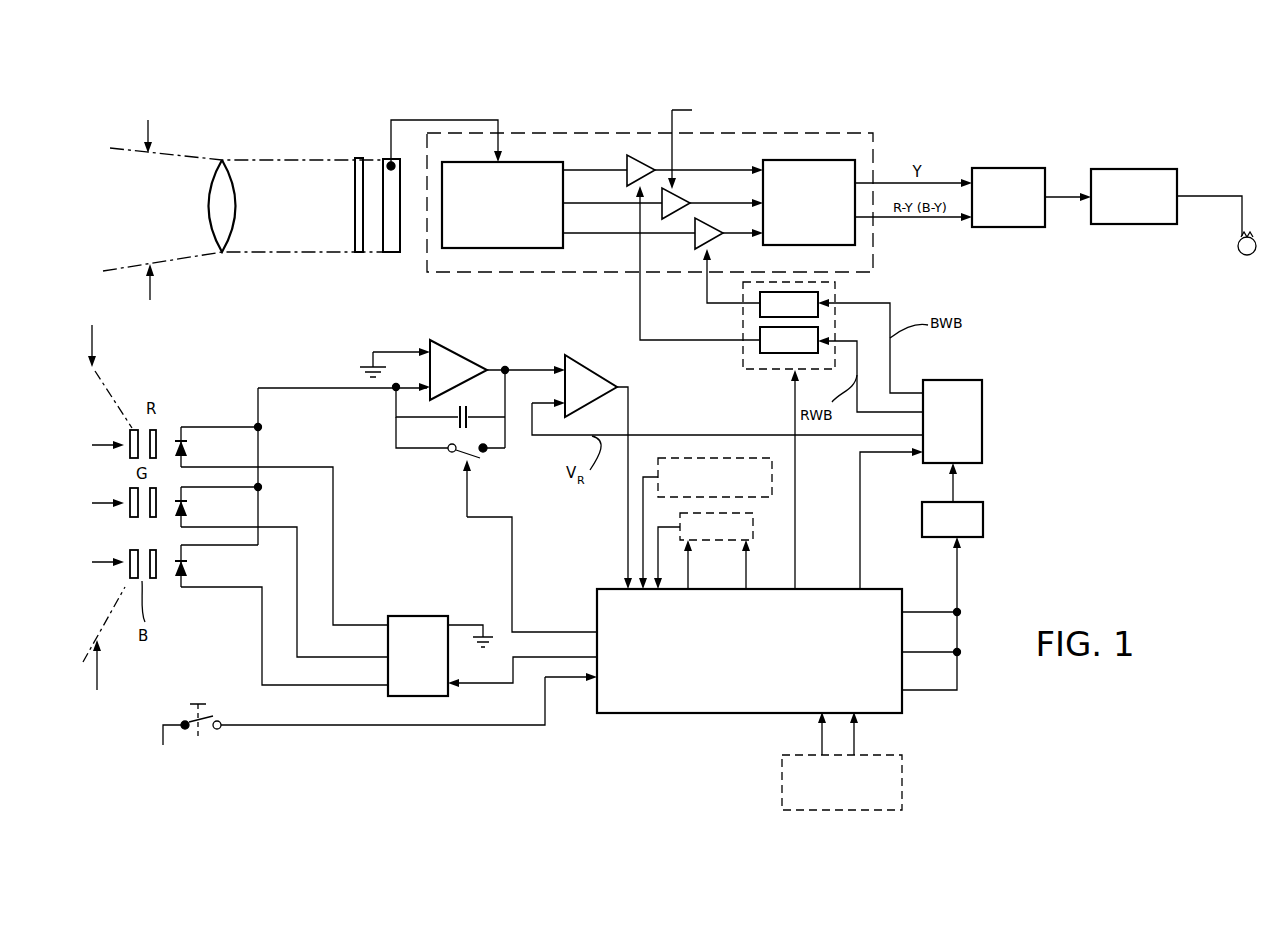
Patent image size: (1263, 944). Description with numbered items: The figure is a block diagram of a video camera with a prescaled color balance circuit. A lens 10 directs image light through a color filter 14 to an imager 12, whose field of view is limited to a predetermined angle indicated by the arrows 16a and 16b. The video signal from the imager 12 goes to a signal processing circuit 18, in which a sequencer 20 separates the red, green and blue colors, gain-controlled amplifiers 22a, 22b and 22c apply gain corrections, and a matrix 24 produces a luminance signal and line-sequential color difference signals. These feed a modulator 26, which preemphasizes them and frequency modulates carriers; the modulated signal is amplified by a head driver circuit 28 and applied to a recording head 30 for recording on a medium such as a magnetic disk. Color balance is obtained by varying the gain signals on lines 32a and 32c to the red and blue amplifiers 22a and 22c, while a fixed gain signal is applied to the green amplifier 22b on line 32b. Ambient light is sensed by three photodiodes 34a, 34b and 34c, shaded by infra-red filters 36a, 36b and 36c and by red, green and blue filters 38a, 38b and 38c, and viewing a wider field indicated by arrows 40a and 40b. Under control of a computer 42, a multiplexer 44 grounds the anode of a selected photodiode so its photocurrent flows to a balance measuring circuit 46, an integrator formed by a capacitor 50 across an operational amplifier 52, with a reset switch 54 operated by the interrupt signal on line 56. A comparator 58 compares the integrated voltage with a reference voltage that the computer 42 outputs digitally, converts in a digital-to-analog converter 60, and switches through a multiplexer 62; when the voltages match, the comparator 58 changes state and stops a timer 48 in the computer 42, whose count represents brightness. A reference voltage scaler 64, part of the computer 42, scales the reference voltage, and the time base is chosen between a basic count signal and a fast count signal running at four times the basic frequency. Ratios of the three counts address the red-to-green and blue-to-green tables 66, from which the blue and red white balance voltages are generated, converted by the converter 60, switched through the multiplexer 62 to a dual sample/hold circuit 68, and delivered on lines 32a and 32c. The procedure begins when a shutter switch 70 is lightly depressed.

The lens 10 is at (222, 158).
The imager 12 is at (400, 242).
The color filter 14 is at (355, 160).
The arrow 16a is at (148, 126).
The arrow 16b is at (150, 292).
The signal processing circuit 18 is at (748, 133).
The sequencer 20 is at (522, 172).
The red gain-controlled amplifier 22a is at (627, 160).
The green amplifier 22b is at (690, 198).
The blue gain-controlled amplifier 22c is at (720, 243).
The matrix 24 is at (795, 170).
The modulator 26 is at (992, 180).
The head driver circuit 28 is at (1127, 172).
The recording head 30 is at (1237, 250).
The line 32a is at (645, 290).
The line 32b is at (672, 124).
The line 32c is at (712, 284).
The photodiode 34a is at (188, 447).
The photodiode 34b is at (188, 507).
The photodiode 34c is at (190, 567).
The infra-red filter 36a is at (156, 430).
The infra-red filter 36b is at (154, 518).
The infra-red filter 36c is at (157, 579).
The red filter 38a is at (133, 428).
The green filter 38b is at (130, 495).
The blue filter 38c is at (132, 571).
The arrow 40a is at (92, 335).
The arrow 40b is at (97, 665).
The computer 42 is at (818, 595).
The multiplexer 44 is at (415, 625).
The balance measuring circuit 46 is at (499, 348).
The timer 48 is at (755, 527).
The capacitor 50 is at (458, 430).
The operational amplifier 52 is at (450, 350).
The reset switch 54 is at (455, 458).
The line 56 is at (514, 556).
The comparator 58 is at (587, 365).
The digital-to-analog converter 60 is at (985, 520).
The multiplexer 62 is at (985, 410).
The VR scaler 64 is at (735, 456).
The R/G and B/G tables 66 is at (905, 785).
The dual sample/hold circuit 68 is at (835, 292).
The shutter switch 70 is at (207, 713).